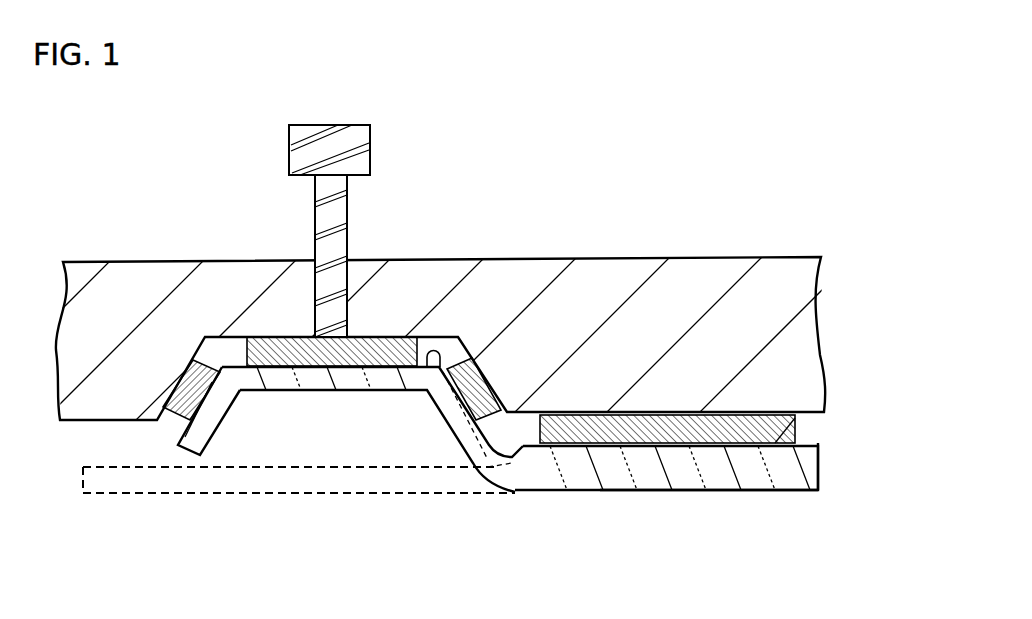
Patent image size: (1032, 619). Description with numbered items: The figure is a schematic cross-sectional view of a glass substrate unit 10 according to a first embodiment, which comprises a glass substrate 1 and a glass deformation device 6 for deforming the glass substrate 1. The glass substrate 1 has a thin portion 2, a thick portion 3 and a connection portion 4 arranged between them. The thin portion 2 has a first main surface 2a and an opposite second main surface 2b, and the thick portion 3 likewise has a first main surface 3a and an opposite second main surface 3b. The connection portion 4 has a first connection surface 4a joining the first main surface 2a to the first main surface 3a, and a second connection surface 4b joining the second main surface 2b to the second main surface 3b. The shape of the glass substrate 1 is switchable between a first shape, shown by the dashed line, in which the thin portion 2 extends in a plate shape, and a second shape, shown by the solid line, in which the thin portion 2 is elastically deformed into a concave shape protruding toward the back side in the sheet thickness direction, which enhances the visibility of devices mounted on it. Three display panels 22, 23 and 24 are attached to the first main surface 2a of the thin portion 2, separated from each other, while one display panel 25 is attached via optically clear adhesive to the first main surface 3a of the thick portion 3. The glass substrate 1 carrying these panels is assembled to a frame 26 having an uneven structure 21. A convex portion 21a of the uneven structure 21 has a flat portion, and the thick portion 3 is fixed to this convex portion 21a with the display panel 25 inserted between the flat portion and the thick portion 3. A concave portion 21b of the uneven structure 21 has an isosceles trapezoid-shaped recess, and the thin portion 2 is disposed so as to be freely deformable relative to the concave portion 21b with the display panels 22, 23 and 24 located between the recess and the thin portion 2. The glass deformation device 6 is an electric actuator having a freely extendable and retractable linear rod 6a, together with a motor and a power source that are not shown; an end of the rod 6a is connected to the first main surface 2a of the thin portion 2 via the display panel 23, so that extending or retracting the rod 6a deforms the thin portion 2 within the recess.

The glass substrate 1 is at (767, 502).
The thin portion 2 is at (328, 382).
The first main surface 2a is at (433, 390).
The second main surface 2b is at (268, 391).
The thick portion 3 is at (658, 478).
The first main surface 3a is at (810, 432).
The second main surface 3b is at (708, 491).
The connection portion 4 is at (501, 475).
The first connection surface 4a is at (523, 455).
The second connection surface 4b is at (512, 495).
The glass deformation device 6 is at (389, 146).
The rod 6a is at (335, 211).
The glass substrate unit 10 is at (826, 219).
The uneven structure 21 is at (844, 409).
The convex portion 21a is at (688, 412).
The concave portion 21b is at (436, 345).
The display panel 22 is at (185, 382).
The display panel 23 is at (272, 345).
The display panel 24 is at (490, 375).
The display panel 25 is at (778, 413).
The frame 26 is at (608, 289).